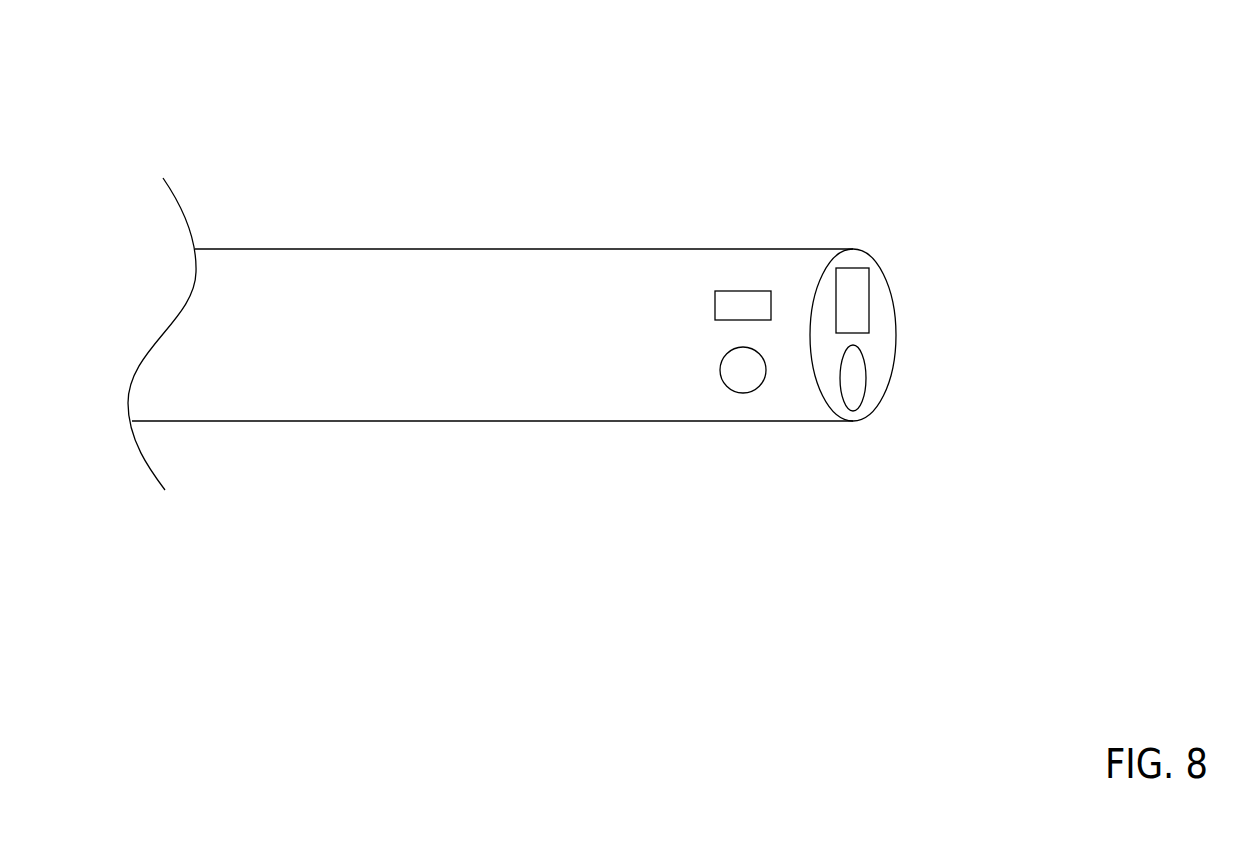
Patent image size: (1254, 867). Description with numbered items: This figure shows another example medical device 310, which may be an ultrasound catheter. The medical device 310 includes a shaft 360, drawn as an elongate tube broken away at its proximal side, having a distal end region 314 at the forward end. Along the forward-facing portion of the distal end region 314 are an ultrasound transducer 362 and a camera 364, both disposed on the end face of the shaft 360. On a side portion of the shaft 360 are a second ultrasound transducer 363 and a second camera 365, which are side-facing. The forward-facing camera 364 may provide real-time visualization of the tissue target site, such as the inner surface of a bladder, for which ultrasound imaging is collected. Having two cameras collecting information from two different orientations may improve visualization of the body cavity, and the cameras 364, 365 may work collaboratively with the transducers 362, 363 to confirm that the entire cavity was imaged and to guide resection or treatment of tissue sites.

The medical device 310 is at (732, 110).
The distal end region 314 is at (745, 438).
The shaft 360 is at (343, 268).
The ultrasound transducer 362 is at (853, 280).
The second ultrasound transducer 363 is at (743, 291).
The camera 364 is at (855, 383).
The second camera 365 is at (759, 378).